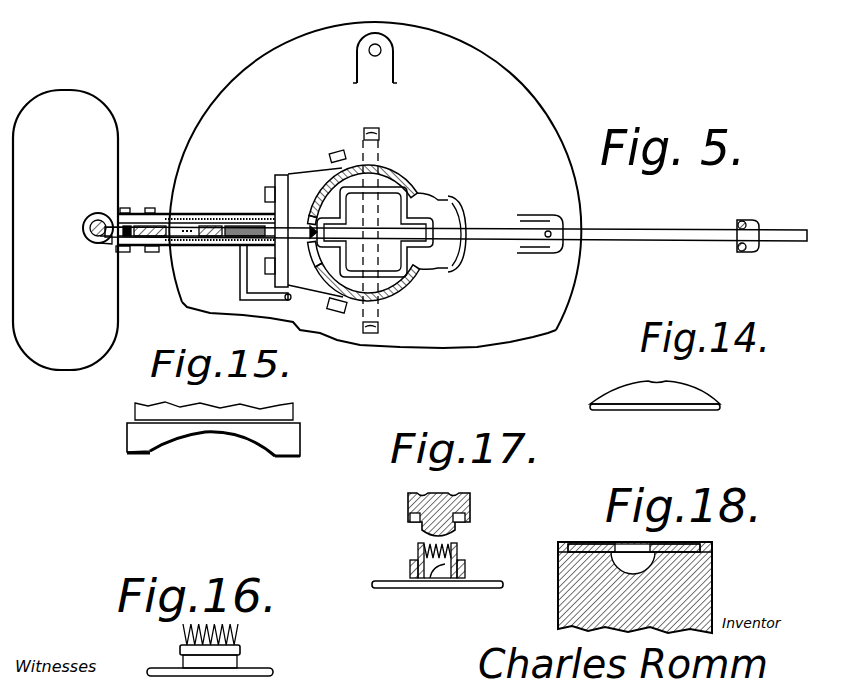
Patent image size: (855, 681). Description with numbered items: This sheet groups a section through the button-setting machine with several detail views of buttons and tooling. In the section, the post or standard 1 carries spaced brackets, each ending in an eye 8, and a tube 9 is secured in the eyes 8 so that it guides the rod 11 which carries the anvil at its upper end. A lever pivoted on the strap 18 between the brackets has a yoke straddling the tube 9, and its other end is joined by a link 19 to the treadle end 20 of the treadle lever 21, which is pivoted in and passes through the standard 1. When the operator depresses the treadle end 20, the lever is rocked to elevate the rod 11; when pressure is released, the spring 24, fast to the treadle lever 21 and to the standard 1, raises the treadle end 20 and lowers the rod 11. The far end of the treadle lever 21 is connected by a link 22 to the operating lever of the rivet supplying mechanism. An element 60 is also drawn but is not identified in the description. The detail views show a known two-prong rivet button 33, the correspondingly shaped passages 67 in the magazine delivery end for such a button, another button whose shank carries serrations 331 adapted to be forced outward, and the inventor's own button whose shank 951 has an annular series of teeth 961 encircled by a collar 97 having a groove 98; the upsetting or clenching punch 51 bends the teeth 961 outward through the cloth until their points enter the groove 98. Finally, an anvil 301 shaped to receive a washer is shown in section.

In FIG. 5, the post or standard 1 is at (398, 186).
In FIG. 5, the eye 8 is at (94, 212).
In FIG. 5, the tube 9 is at (90, 225).
In FIG. 5, the rod 11 is at (100, 241).
In FIG. 5, the strap 18 is at (140, 225).
In FIG. 5, the link 19 is at (213, 227).
In FIG. 5, the treadle end 20 is at (115, 258).
In FIG. 5, the treadle lever 21 is at (506, 237).
In FIG. 5, the link 22 is at (745, 222).
In FIG. 5, the spring 24 is at (210, 245).
In FIG. 5, the tubular sleeve 60 is at (186, 222).
In FIG. 14, the button or button blank 33 is at (638, 406).
In FIG. 15, the passages 67 is at (188, 444).
In FIG. 17, the upsetting or clenching punch 51 is at (465, 506).
In FIG. 17, the teeth or projections 961 is at (455, 547).
In FIG. 17, the collar 97 is at (410, 566).
In FIG. 17, the groove 98 is at (465, 565).
In FIG. 17, the shank of the button 951 is at (437, 580).
In FIG. 18, the anvil 301 is at (672, 576).
In FIG. 16, the serrations 331 is at (238, 631).